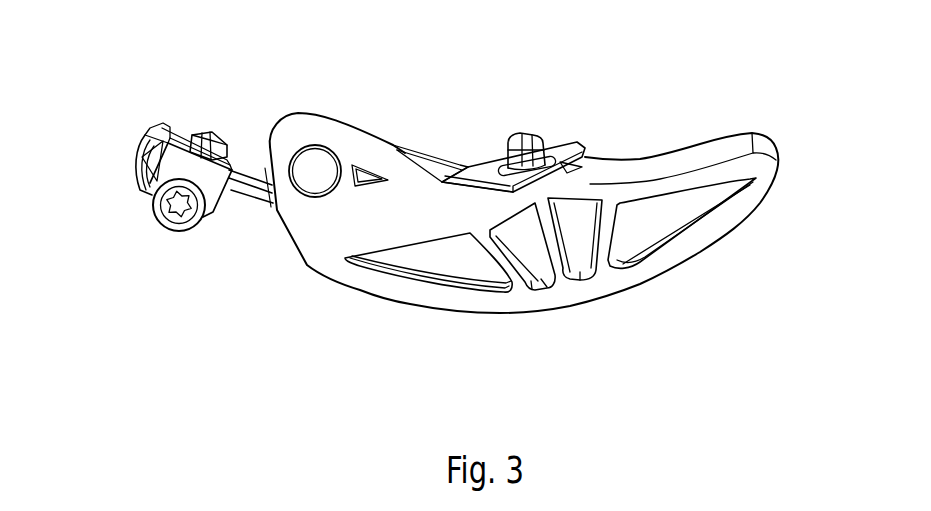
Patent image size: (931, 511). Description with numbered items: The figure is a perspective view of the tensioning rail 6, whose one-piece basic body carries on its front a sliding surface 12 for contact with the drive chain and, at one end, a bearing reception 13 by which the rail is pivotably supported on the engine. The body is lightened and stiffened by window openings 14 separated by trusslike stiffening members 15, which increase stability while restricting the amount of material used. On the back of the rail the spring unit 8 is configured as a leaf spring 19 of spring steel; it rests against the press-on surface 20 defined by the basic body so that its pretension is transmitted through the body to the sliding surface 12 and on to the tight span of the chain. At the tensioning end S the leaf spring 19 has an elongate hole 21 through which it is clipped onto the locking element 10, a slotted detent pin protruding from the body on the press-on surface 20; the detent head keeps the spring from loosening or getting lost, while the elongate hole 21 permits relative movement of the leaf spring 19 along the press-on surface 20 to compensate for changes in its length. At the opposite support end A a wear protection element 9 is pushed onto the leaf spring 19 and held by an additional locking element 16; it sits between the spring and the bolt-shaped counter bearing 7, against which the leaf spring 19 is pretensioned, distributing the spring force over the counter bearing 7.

The tensioning rail 6 is at (687, 136).
The counter bearing 7 is at (183, 212).
The spring unit 8 is at (251, 195).
The wear protection element 9 is at (185, 170).
The locking element 10 is at (512, 135).
The sliding surface 12 is at (503, 318).
The bearing reception 13 is at (331, 162).
The window openings 14 is at (658, 213).
The trusslike stiffening members 15 is at (563, 267).
The additional locking element 16 is at (200, 133).
The leaf spring 19 is at (480, 180).
The press-on surface 20 is at (590, 154).
The elongate hole 21 is at (548, 147).
The support end A is at (141, 131).
The tensioning end S is at (599, 151).